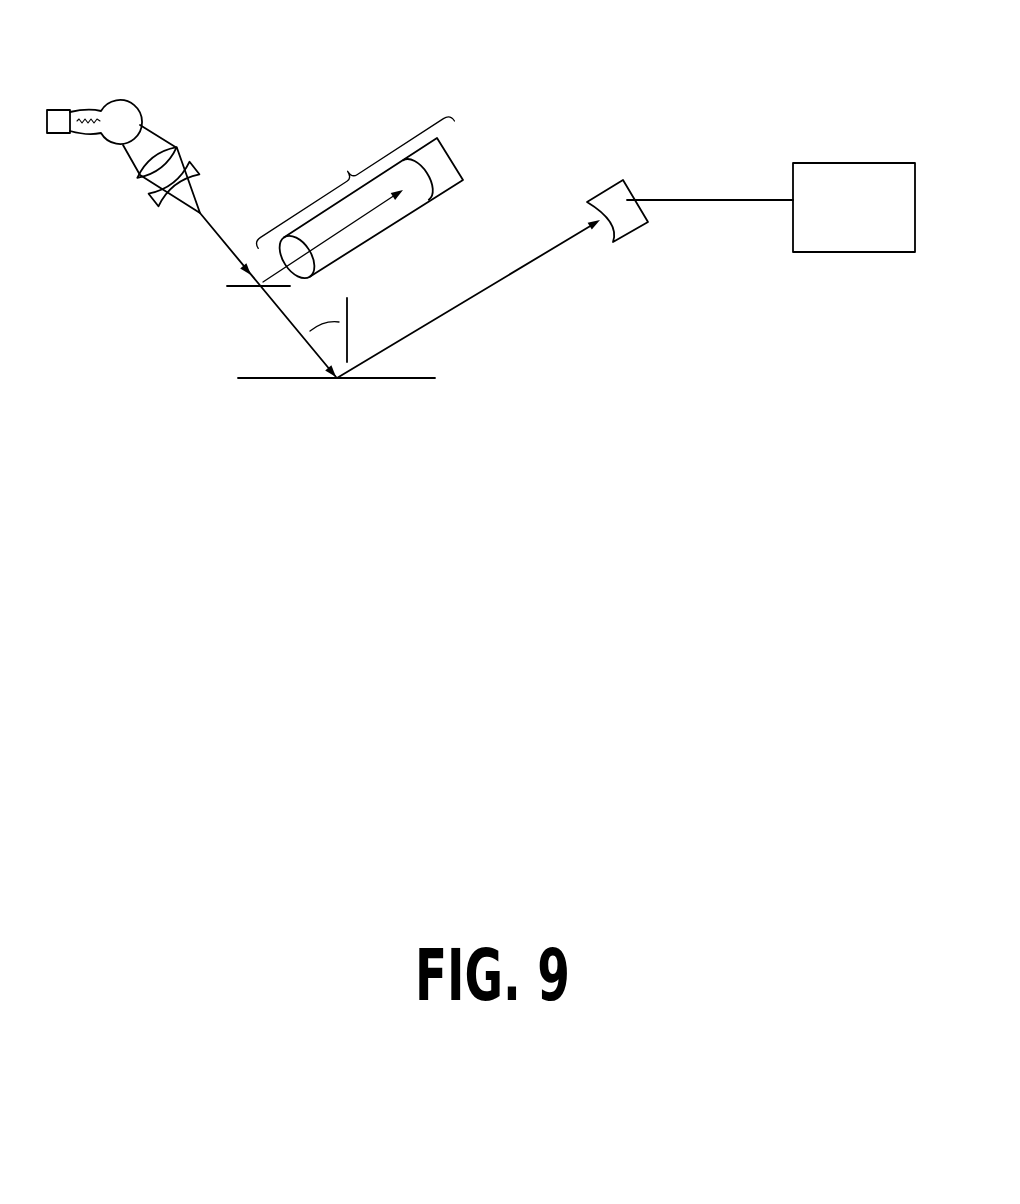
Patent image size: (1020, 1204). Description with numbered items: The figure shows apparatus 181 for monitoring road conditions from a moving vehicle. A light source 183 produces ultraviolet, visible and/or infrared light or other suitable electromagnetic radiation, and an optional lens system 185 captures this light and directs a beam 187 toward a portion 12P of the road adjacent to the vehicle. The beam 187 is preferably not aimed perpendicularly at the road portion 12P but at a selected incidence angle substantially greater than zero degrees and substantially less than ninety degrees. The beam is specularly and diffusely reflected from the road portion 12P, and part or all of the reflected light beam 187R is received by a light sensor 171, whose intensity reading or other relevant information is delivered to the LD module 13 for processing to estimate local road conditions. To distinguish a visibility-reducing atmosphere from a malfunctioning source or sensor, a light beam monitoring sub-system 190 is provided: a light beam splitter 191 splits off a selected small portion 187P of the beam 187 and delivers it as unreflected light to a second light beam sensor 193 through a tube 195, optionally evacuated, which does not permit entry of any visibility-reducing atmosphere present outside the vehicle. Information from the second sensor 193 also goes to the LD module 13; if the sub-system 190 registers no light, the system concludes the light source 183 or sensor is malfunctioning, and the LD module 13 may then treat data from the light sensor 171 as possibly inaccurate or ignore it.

The apparatus 181 is at (520, 62).
The light source 183 is at (122, 102).
The lens system 185 is at (182, 168).
The light beam 187 is at (213, 225).
The light beam monitoring sub-system 190 is at (352, 178).
The light beam splitter 191 is at (242, 288).
The second light beam sensor 193 is at (443, 165).
The tube 195 is at (368, 235).
The selected portion of the light beam 187P is at (380, 208).
The reflected light beam 187R is at (458, 313).
The portion of road 12P is at (336, 409).
The light sensor 171 is at (633, 225).
The LD module 13 is at (863, 221).